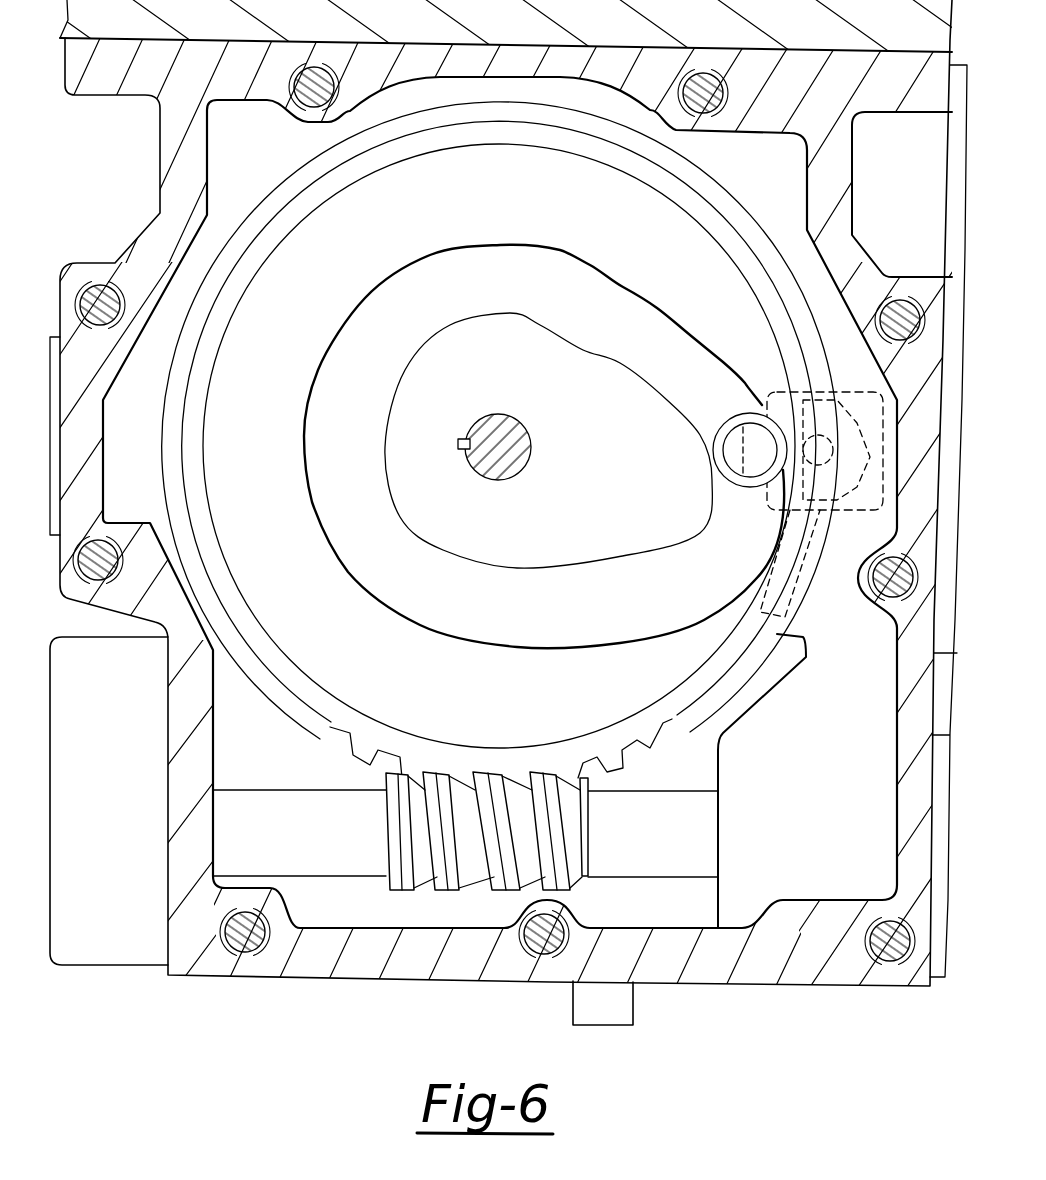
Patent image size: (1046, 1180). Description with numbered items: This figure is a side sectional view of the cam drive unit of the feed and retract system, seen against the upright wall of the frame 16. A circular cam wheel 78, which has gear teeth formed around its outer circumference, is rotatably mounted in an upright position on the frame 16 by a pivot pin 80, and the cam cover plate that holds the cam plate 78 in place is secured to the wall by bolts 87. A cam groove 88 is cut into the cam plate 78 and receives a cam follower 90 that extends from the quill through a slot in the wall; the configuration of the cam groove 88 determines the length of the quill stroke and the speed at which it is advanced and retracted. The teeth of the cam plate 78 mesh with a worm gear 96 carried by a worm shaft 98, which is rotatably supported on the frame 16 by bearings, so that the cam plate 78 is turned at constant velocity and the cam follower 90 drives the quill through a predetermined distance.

The frame 16 is at (376, 885).
The cam wheel 78 is at (650, 716).
The pivot pin 80 is at (517, 422).
The bolts 87 is at (236, 938).
The cam groove 88 is at (482, 262).
The cam follower 90 is at (727, 455).
The worm gear 96 is at (460, 888).
The worm shaft 98 is at (650, 868).